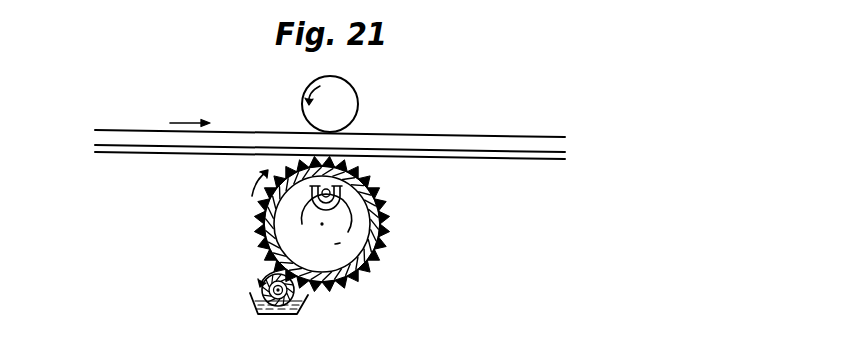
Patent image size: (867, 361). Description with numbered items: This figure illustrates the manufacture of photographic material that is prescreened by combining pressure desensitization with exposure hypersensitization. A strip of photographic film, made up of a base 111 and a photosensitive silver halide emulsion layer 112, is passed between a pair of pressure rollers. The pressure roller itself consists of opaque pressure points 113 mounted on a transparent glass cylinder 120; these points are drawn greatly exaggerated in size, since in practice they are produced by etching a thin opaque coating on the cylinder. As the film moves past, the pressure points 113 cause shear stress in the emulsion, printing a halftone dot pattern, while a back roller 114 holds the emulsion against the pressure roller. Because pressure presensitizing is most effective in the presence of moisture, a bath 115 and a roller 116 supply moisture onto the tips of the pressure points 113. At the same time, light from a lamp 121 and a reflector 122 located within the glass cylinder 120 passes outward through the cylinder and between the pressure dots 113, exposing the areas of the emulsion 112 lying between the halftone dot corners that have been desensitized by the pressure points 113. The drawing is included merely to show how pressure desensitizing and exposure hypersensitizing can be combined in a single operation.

The base 111 is at (110, 134).
The photosensitive silver halide emulsion layer 112 is at (101, 151).
The pressure points 113 is at (378, 194).
The back roller 114 is at (342, 103).
The bath 115 is at (297, 314).
The roller 116 is at (300, 292).
The transparent glass cylinder 120 is at (383, 236).
The lamp 121 is at (315, 210).
The reflector 122 is at (327, 225).